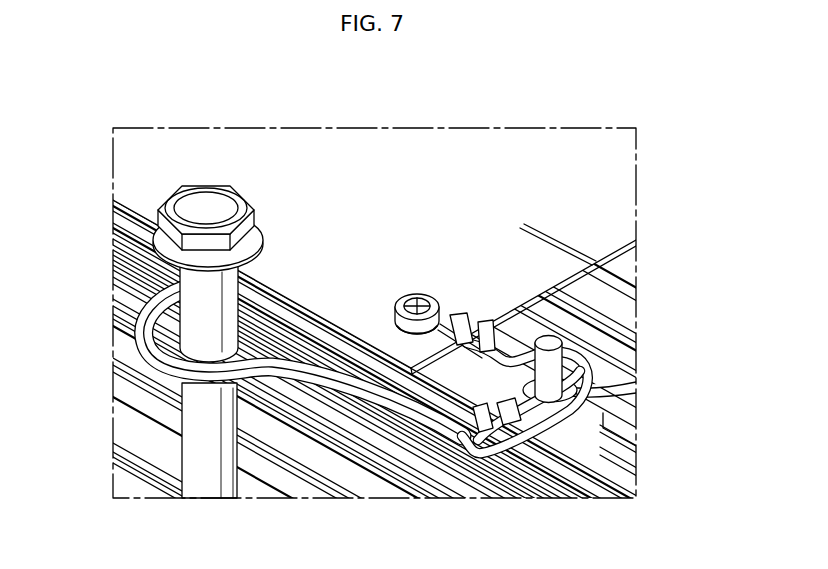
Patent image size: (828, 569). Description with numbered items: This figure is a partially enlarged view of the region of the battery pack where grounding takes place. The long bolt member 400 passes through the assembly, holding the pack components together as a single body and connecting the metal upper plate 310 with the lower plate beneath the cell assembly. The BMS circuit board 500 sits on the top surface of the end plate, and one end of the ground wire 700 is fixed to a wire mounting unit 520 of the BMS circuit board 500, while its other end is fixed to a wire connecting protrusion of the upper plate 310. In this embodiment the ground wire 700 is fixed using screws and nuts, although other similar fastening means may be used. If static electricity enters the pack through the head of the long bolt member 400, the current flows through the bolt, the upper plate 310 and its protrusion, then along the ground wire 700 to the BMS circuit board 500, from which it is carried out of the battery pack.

The BMS circuit board 500 is at (387, 153).
The upper plate 310 is at (143, 317).
The long bolt member 400 is at (193, 442).
The wire mounting unit 520 is at (403, 343).
The ground wire 700 is at (597, 368).